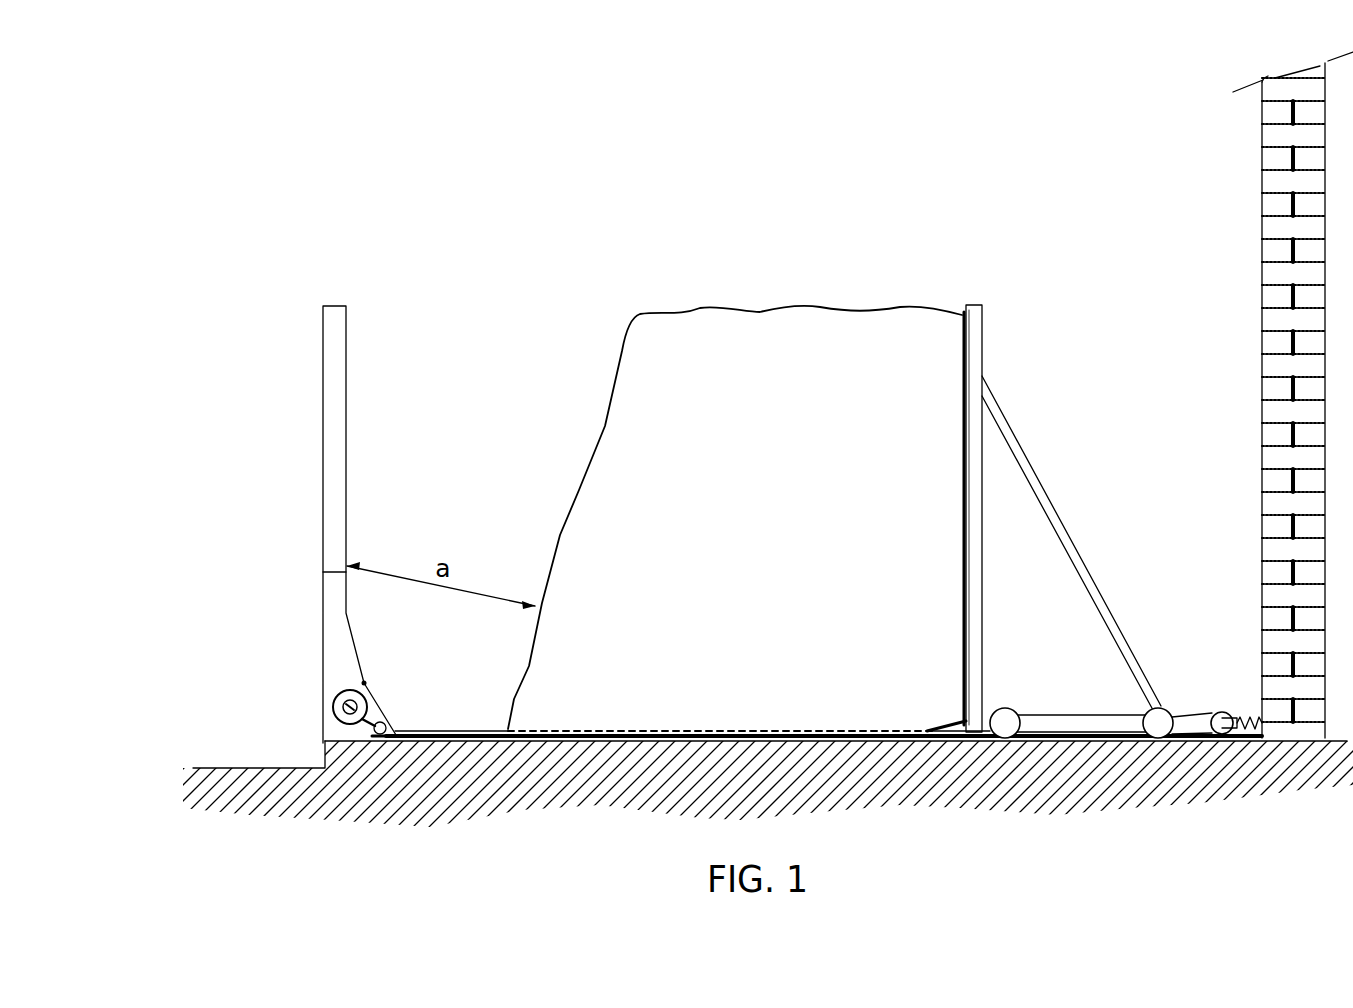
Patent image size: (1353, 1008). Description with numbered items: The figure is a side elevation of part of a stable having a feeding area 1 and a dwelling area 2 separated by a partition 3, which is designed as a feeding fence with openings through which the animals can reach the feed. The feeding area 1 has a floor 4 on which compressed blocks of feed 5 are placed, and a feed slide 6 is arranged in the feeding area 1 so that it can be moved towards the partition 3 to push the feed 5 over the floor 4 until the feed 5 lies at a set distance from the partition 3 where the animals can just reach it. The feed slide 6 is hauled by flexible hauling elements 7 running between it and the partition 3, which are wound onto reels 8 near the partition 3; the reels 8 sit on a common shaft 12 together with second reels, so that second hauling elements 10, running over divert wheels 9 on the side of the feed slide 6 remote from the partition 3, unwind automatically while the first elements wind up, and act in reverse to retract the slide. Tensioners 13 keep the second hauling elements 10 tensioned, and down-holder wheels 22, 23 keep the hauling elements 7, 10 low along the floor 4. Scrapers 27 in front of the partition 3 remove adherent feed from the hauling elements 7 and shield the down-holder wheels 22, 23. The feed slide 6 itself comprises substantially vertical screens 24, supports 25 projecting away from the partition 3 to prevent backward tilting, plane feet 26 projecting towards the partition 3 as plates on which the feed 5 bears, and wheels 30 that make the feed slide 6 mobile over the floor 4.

The feeding area 1 is at (489, 373).
The dwelling area 2 is at (231, 745).
The partition 3 is at (340, 293).
The floor 4 is at (897, 743).
The feed 5 is at (768, 529).
The feed slide 6 is at (976, 293).
The flexible hauling elements 7 is at (477, 731).
The reels 8 is at (333, 707).
The divert wheels 9 is at (1220, 718).
The second hauling elements 10 is at (1066, 731).
The common shaft 12 is at (340, 698).
The tensioners 13 is at (1251, 718).
The down-holder wheel 22 is at (386, 724).
The down-holder wheel 23 is at (374, 743).
The screens 24 is at (973, 360).
The supports 25 is at (1022, 447).
The feet 26 is at (947, 726).
The scrapers 27 is at (372, 695).
The wheels 30 is at (1005, 722).